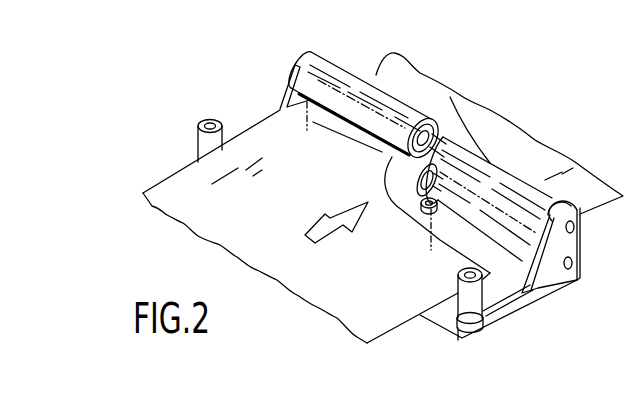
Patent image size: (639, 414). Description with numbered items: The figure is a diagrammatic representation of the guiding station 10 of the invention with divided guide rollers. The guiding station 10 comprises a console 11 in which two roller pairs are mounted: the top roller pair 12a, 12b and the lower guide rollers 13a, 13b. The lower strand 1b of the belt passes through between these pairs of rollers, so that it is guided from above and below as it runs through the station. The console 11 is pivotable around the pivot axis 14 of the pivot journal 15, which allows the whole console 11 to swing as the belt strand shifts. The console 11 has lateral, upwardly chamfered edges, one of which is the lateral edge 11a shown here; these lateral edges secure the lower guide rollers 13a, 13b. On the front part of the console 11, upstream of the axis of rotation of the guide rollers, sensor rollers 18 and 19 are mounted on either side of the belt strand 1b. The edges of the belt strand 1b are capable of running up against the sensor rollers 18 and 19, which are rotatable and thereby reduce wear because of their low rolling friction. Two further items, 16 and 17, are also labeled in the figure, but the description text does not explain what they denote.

The lower strand of belt 1b is at (180, 207).
The guiding station 10 is at (537, 310).
The console 11 is at (420, 316).
The lateral upwardly chamfered edge 11a is at (560, 277).
The top guide roller 12a is at (398, 99).
The top guide roller 12b is at (523, 182).
The lower guide roller 13a is at (397, 168).
The lower guide roller 13b is at (517, 243).
The pivot axis 14 is at (428, 232).
The pivot journal 15 is at (426, 208).
The web loop between rollers 16 is at (474, 153).
The flange 17 is at (353, 133).
The sensor roller 18 is at (458, 323).
The sensor roller 19 is at (198, 143).